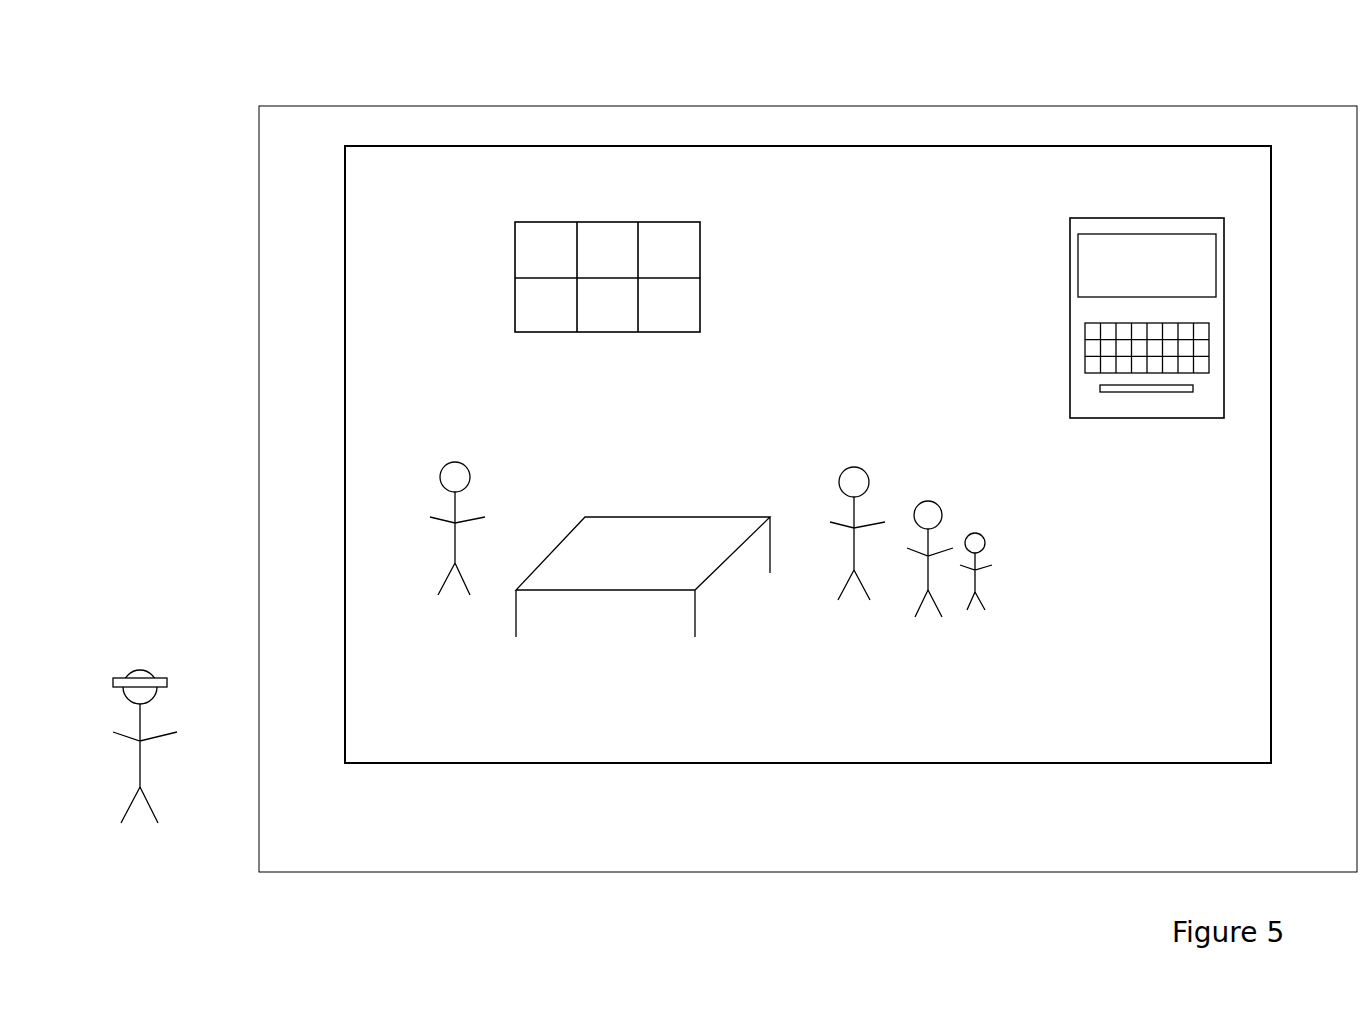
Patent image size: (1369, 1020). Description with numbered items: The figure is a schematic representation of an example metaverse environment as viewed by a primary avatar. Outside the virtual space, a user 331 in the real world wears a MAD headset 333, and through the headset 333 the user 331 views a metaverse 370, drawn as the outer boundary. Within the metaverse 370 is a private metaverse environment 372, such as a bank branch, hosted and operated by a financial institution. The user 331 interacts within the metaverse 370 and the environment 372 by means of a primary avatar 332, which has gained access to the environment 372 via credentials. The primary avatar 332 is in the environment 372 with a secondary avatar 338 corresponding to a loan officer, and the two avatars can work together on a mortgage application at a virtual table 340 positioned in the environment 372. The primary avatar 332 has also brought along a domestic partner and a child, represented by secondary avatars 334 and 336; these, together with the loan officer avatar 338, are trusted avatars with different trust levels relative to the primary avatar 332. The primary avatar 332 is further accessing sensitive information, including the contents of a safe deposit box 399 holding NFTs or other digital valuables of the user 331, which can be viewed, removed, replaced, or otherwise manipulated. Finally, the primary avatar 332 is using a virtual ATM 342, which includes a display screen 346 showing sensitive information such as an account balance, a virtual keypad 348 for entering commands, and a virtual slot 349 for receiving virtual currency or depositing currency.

The metaverse 370 is at (300, 106).
The private metaverse environment 372 is at (545, 146).
The safe deposit box 399 is at (492, 232).
The virtual ATM 342 is at (1037, 224).
The display screen 346 is at (1178, 234).
The virtual keypad 348 is at (1085, 352).
The virtual slot 349 is at (1100, 388).
The secondary avatar 338 is at (428, 457).
The virtual table 340 is at (653, 535).
The primary avatar 332 is at (823, 468).
The secondary avatar 334 is at (922, 483).
The secondary avatar 336 is at (1002, 523).
The user 331 is at (192, 718).
The MAD headset 333 is at (165, 678).